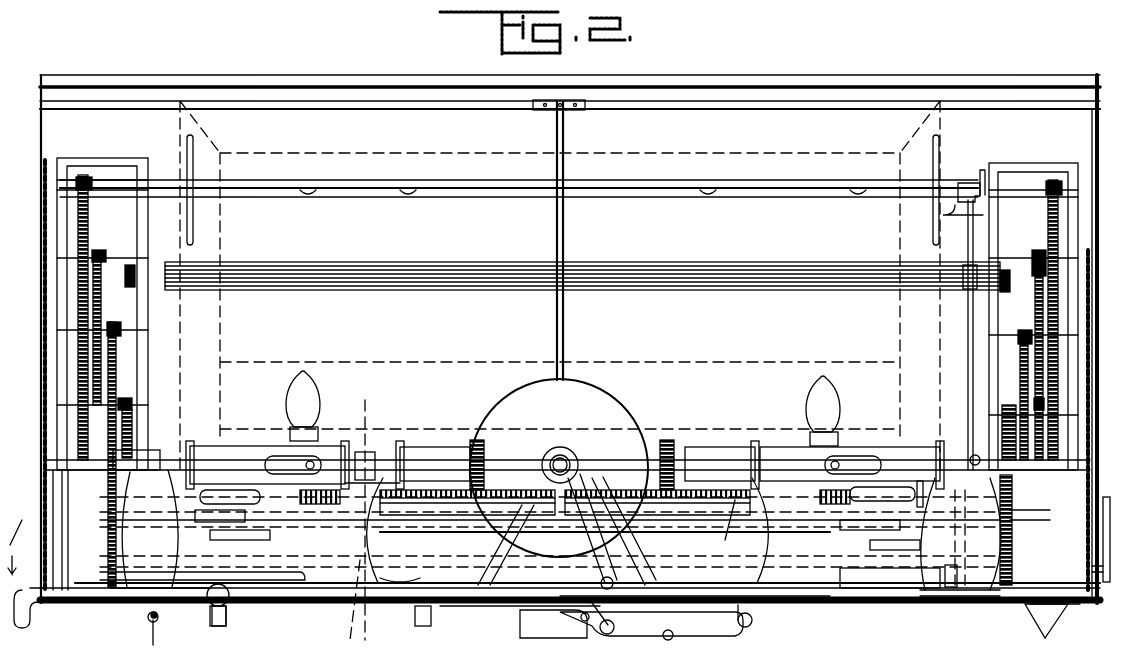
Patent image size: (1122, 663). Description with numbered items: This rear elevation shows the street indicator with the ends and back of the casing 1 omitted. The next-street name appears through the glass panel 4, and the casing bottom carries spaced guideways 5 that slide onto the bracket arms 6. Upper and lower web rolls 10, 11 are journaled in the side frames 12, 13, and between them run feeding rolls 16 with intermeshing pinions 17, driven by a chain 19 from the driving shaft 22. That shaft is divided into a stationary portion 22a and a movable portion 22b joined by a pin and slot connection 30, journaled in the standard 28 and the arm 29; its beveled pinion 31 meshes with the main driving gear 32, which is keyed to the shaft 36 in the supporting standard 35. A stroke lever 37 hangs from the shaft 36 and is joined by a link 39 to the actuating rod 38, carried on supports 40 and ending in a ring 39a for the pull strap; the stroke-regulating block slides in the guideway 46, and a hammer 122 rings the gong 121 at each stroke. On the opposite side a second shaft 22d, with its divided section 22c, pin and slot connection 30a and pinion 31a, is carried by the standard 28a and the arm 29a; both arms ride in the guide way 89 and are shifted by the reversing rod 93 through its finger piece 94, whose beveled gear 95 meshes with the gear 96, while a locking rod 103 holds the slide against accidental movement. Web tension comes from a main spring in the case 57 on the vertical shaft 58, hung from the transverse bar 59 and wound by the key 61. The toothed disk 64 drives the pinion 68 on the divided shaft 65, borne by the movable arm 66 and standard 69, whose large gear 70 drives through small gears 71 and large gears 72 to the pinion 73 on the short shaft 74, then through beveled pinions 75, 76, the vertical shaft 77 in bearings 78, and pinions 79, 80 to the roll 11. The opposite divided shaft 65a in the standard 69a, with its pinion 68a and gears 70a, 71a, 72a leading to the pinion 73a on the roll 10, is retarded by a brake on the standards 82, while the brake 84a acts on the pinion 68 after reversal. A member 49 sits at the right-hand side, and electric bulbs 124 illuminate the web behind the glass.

The casing 1 is at (776, 88).
The glass panel 4 is at (12, 544).
The spaced guideways 5 is at (1039, 623).
The bracket arms 6 is at (1048, 636).
The upper web roll 10 is at (508, 195).
The lower web roll 11 is at (367, 528).
The side frame 12 is at (104, 160).
The side frame 13 is at (1020, 165).
The feeding roll 16 is at (360, 262).
The intermeshing pinions 17 is at (135, 280).
The driving chain 19 is at (44, 332).
The driving shaft 22 is at (70, 460).
The stationary portion of driving shaft 22a is at (212, 460).
The movable portion of driving shaft 22b is at (412, 458).
The divided section of shaft 22c is at (696, 455).
The shaft 22d is at (900, 455).
The standard 28 is at (118, 578).
The standard 28a is at (968, 590).
The arm 29 is at (386, 540).
The movable arm 29a is at (755, 555).
The pin and slot connection 30 is at (285, 462).
The pin and slot connection 30a is at (845, 460).
The beveled pinion 31 is at (476, 443).
The pinion 31a is at (672, 445).
The main driving gear 32 is at (600, 400).
The supporting standard 35 is at (622, 546).
The shaft 36 is at (578, 460).
The stroke lever 37 is at (585, 495).
The actuating rod 38 is at (520, 610).
The link 39 is at (604, 632).
The pivot pin 39a is at (152, 637).
The supports 40 is at (426, 626).
The guideway 46 is at (805, 590).
The bracket 49 is at (1112, 526).
The case 57 is at (738, 522).
The vertical shaft 58 is at (564, 300).
The transverse bar 59 is at (576, 112).
The manipulating key 61 is at (540, 630).
The tension gear 64 is at (400, 498).
The divided shaft 65 is at (886, 496).
The divided shaft 65a is at (230, 497).
The movable arm 66 is at (880, 532).
The pinion 68 is at (750, 490).
The beveled pinion 68a is at (372, 465).
The standard 69 is at (896, 548).
The standard 69a is at (220, 528).
The large gear 70 is at (1012, 540).
The large gear 70a is at (132, 428).
The small gears 71 is at (1036, 252).
The small gears 71a is at (106, 256).
The large gears 72 is at (1058, 225).
The large gears 72a is at (88, 230).
The pinion 73 is at (1062, 188).
The pinion 73a is at (84, 175).
The short shaft 74 is at (1015, 192).
The beveled pinion 75 is at (980, 170).
The pinion 76 is at (960, 215).
The vertical shaft 77 is at (968, 338).
The bearings 78 is at (968, 282).
The beveled pinion 79 is at (1012, 503).
The pinion 80 is at (962, 537).
The vertically extending standards 82 is at (575, 522).
The brake 84a is at (790, 456).
The guide way 89 is at (858, 585).
The reversing rod 93 is at (349, 603).
The finger piece 94 is at (70, 598).
The beveled gear 95 is at (205, 607).
The gear 96 is at (232, 588).
The locking rod 103 is at (285, 580).
The gong 121 is at (660, 636).
The tapper 122 is at (744, 628).
The electric bulbs 124 is at (318, 385).